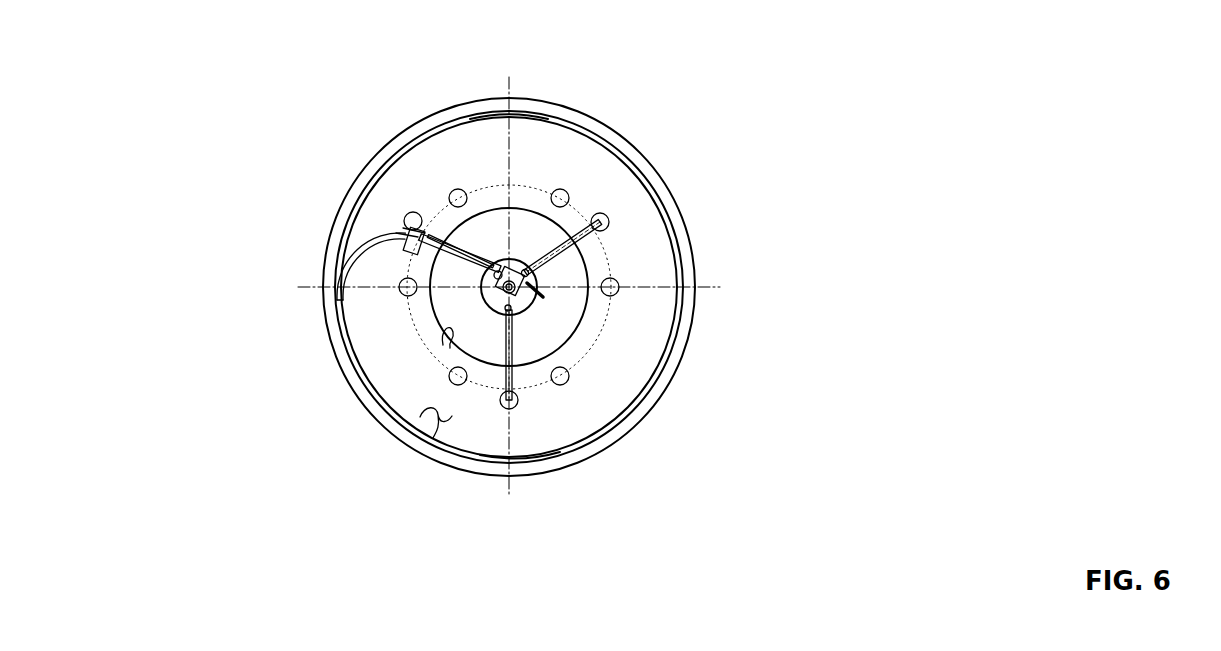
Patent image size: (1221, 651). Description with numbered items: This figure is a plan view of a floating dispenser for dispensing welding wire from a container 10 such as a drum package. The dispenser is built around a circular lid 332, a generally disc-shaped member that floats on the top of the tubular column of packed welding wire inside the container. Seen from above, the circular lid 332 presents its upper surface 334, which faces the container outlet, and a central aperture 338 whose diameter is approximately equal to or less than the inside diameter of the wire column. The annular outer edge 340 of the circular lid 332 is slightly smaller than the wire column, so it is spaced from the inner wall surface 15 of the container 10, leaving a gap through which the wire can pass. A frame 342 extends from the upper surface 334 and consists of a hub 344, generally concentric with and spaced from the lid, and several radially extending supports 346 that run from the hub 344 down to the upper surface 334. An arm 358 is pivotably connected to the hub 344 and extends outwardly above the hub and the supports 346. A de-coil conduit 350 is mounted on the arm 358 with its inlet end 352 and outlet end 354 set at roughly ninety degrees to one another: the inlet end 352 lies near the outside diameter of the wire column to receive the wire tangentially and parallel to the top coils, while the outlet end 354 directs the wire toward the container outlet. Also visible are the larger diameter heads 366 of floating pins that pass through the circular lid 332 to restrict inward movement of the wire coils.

The container 10 is at (413, 109).
The inner wall surface 15 is at (447, 124).
The circular lid 332 is at (356, 387).
The upper surface 334 is at (423, 437).
The central aperture 338 is at (450, 350).
The annular outer edge 340 is at (543, 455).
The frame 342 is at (560, 240).
The hub 344 is at (530, 314).
The radially extending supports 346 is at (458, 262).
The de-coil conduit 350 is at (366, 236).
The inlet end 352 is at (338, 280).
The outlet end 354 is at (494, 277).
The arm 358 is at (484, 262).
The head 366 is at (451, 192).